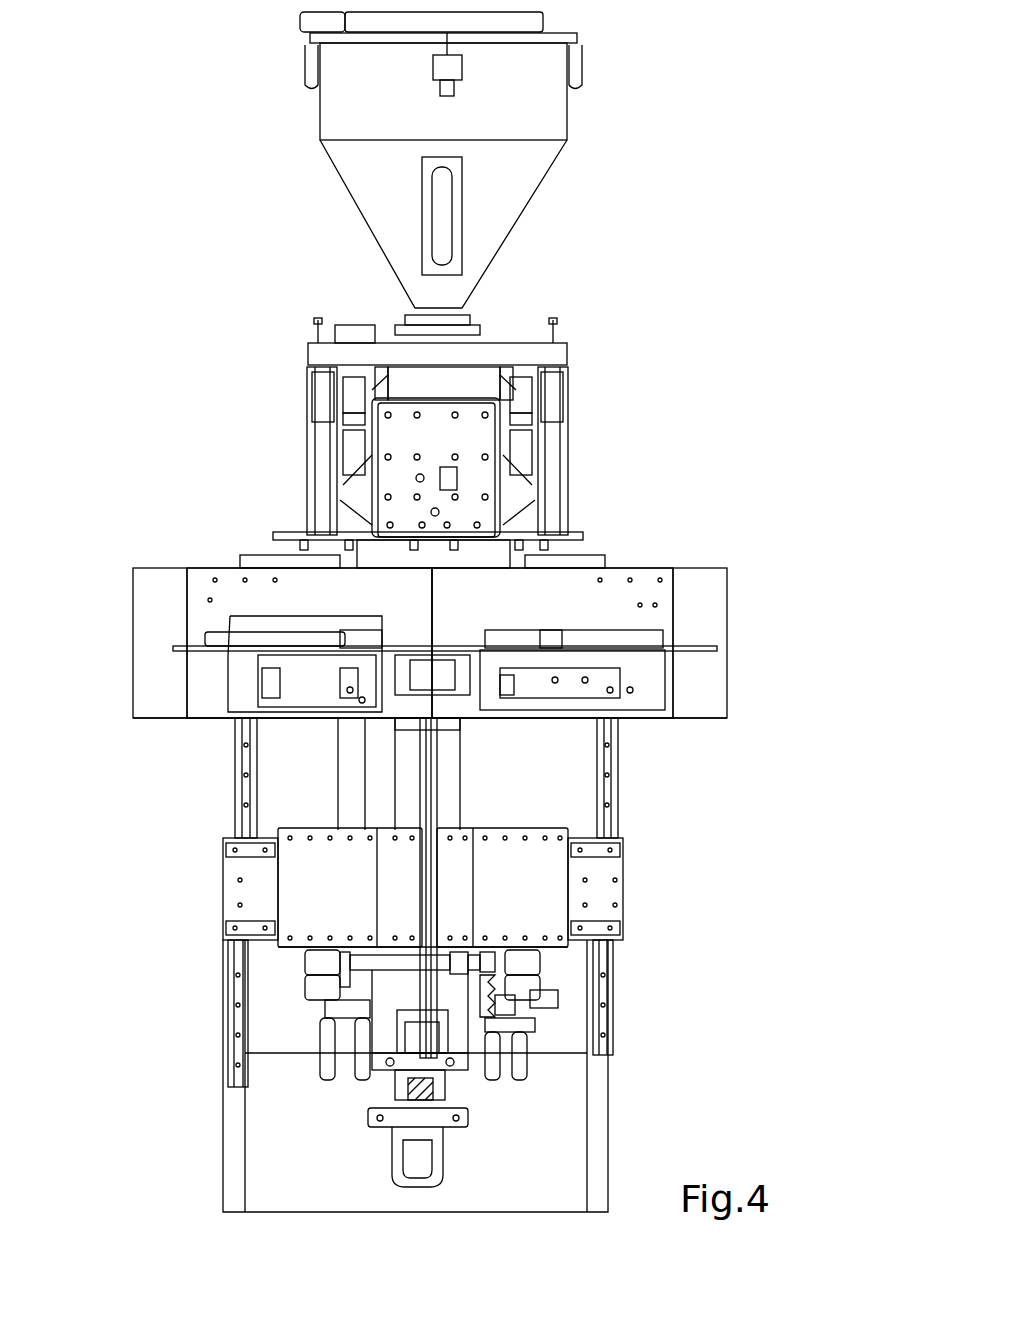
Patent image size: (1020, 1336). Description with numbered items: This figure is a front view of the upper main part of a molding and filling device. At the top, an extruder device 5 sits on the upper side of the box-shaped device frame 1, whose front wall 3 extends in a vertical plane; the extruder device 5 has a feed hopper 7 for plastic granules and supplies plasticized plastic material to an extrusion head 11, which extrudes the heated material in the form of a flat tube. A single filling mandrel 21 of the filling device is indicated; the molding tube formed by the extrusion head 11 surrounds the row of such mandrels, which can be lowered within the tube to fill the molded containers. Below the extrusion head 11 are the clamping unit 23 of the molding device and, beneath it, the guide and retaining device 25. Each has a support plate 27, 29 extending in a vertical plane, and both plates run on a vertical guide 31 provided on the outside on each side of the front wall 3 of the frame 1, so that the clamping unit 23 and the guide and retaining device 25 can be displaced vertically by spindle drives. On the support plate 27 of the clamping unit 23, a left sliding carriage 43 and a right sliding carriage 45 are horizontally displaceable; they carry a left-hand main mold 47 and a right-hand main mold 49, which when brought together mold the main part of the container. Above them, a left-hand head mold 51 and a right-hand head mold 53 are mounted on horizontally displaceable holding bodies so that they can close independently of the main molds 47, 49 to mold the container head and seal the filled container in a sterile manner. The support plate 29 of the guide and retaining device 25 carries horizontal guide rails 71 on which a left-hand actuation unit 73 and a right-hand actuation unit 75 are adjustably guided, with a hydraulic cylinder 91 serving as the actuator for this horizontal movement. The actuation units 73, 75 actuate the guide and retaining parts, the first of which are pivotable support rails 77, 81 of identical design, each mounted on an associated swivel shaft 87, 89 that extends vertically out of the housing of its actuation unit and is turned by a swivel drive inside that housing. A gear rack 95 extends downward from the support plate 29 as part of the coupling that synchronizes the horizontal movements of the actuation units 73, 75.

The device frame 1 is at (613, 1125).
The front wall 3 is at (278, 1025).
The extruder device 5 is at (369, 294).
The feed hopper 7 is at (510, 182).
The extrusion head 11 is at (403, 452).
The filling mandrel 21 is at (435, 625).
The clamping unit 23 is at (216, 737).
The guide and retaining device 25 is at (205, 902).
The support plate 27 is at (693, 590).
The support plate 29 is at (605, 888).
The vertical guide 31 is at (230, 1000).
The sliding carriage 43 is at (268, 598).
The sliding carriage 45 is at (633, 622).
The left-hand main mold 47 is at (372, 720).
The right-hand main mold 49 is at (475, 717).
The left-hand head mold 51 is at (347, 630).
The right-hand head mold 53 is at (500, 635).
The horizontal guide rails 71 is at (617, 833).
The left-hand actuation unit 73 is at (300, 882).
The right-hand actuation unit 75 is at (562, 830).
The pivotable support rail 77 is at (403, 727).
The pivotable support rail 81 is at (450, 790).
The swivel shaft 87 is at (402, 782).
The swivel shaft 89 is at (450, 790).
The hydraulic cylinder 91 is at (378, 962).
The gear rack 95 is at (478, 1027).